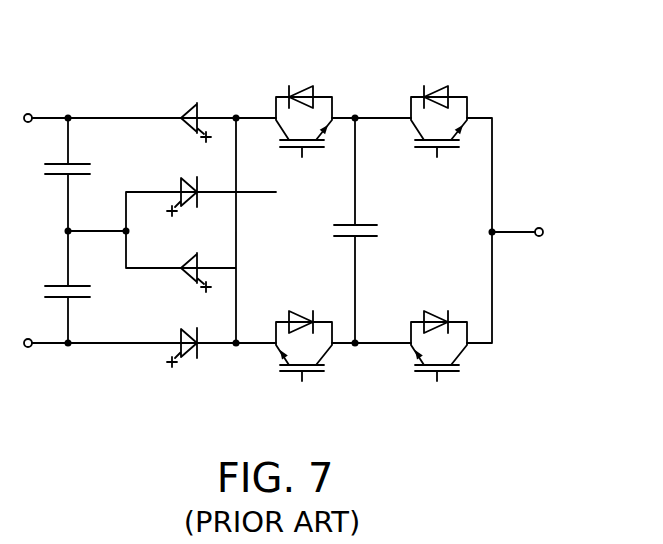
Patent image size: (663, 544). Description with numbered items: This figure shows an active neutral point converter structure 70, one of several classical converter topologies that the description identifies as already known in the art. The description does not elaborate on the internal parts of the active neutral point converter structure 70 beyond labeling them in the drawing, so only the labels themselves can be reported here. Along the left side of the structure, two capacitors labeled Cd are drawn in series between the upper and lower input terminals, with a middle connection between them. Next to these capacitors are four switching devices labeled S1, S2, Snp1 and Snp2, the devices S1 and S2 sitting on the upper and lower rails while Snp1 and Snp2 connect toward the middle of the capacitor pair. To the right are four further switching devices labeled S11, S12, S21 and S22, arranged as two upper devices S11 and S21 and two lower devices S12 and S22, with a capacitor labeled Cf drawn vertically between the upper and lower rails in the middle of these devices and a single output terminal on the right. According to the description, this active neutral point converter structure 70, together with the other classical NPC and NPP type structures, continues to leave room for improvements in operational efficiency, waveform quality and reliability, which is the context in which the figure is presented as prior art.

The active neutral point converter structure 70 is at (486, 54).
The upper main thyristor switch S1 is at (194, 135).
The lower main thyristor switch S2 is at (189, 363).
The neutral point clamping switch 1 Snp1 is at (184, 287).
The neutral point clamping switch 2 Snp2 is at (182, 210).
The IGBT switch S11 is at (303, 138).
The IGBT switch S12 is at (304, 362).
The IGBT switch S21 is at (437, 138).
The IGBT switch S22 is at (439, 362).
The DC-link capacitor Cd is at (56, 230).
The flying capacitor Cf is at (343, 230).